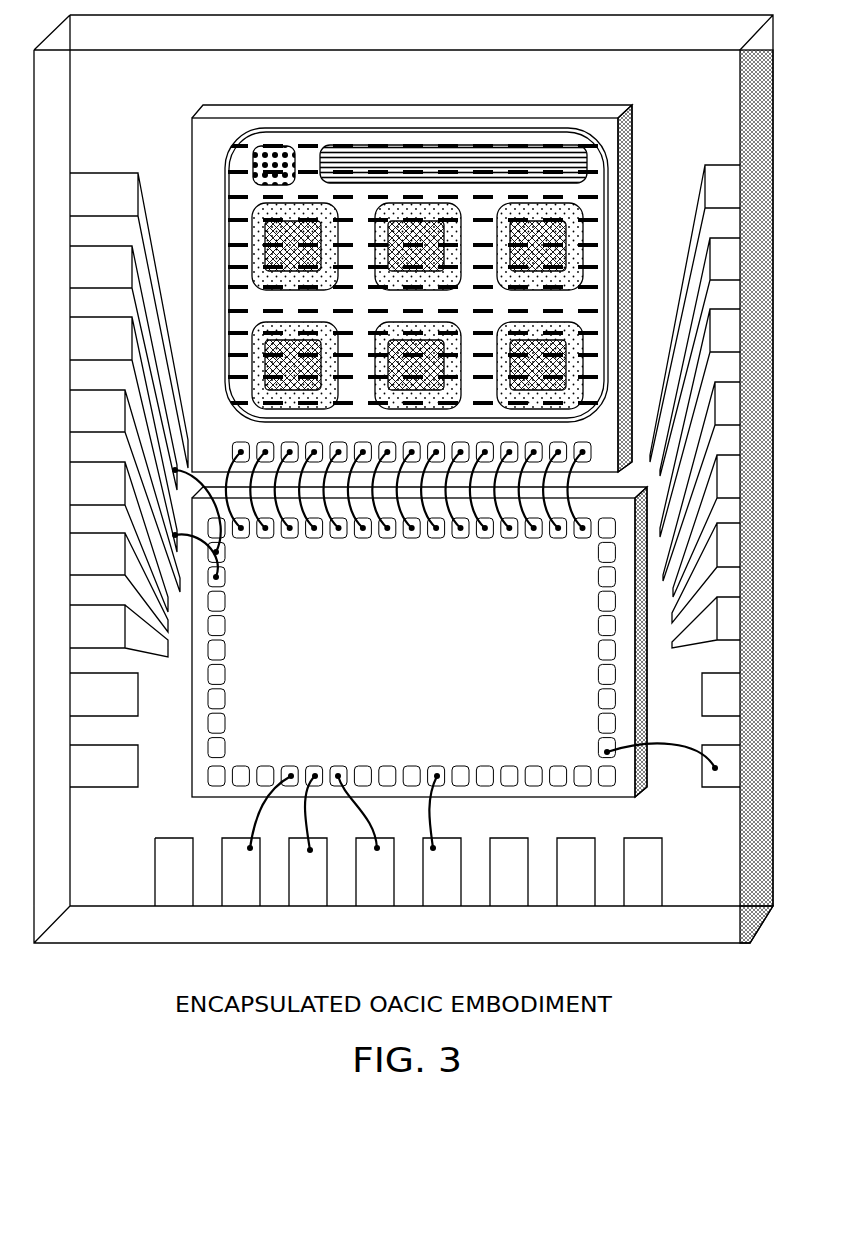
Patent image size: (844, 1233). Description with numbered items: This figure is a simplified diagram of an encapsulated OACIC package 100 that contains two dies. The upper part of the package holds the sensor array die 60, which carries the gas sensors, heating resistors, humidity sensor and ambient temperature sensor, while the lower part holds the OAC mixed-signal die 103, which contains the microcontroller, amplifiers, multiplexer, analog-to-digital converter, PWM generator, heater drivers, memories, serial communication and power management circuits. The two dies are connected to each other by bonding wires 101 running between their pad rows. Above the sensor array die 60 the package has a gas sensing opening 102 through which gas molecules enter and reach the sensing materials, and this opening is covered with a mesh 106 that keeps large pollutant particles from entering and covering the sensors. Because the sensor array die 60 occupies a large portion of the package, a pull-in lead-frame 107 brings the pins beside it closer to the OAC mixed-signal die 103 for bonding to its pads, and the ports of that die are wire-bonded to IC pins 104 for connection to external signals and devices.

The encapsulated OACIC package 100 is at (568, 42).
The gas sensing opening 102 is at (312, 138).
The sensor array die 60 is at (625, 103).
The mesh 106 is at (598, 215).
The pull-in lead-frame 107 is at (145, 202).
The bonding wires 101 is at (300, 545).
The OAC mixed-signal die 103 is at (443, 615).
The IC pins 104 is at (702, 765).